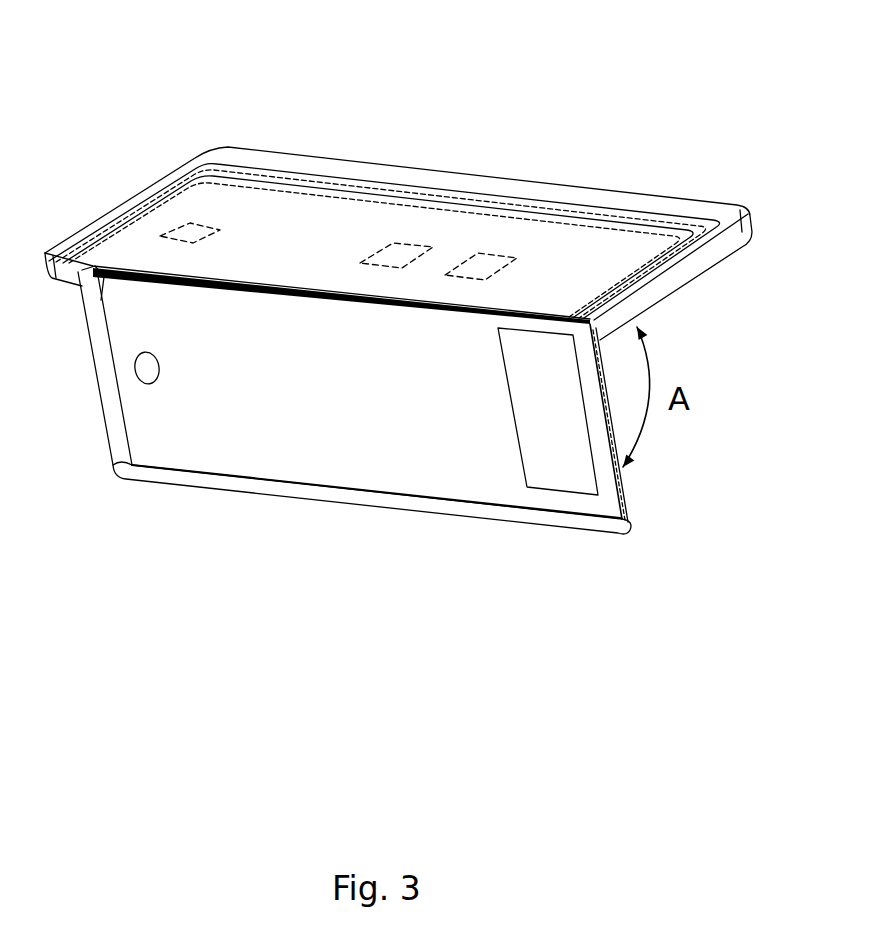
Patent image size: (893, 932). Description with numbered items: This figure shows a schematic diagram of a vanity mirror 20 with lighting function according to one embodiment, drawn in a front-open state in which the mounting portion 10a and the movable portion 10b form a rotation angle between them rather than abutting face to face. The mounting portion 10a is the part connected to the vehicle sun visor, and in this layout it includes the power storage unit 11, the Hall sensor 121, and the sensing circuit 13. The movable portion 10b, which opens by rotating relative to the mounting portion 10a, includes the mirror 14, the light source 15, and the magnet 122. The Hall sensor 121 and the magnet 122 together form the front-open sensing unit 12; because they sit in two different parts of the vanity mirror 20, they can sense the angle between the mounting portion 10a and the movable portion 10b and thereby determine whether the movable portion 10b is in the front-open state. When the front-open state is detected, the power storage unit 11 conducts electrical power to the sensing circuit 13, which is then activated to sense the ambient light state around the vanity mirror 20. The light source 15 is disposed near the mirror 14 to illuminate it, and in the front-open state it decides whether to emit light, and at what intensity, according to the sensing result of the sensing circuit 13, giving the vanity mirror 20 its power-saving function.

The vanity mirror 20 is at (193, 112).
The mounting portion 10a is at (210, 483).
The movable portion 10b is at (578, 196).
The power storage unit 11 is at (418, 240).
The front-open sensing unit 12 is at (680, 607).
The Hall sensor 121 is at (190, 220).
The magnet 122 is at (140, 372).
The sensing circuit 13 is at (492, 253).
The mirror 14 is at (362, 422).
The light source 15 is at (560, 493).